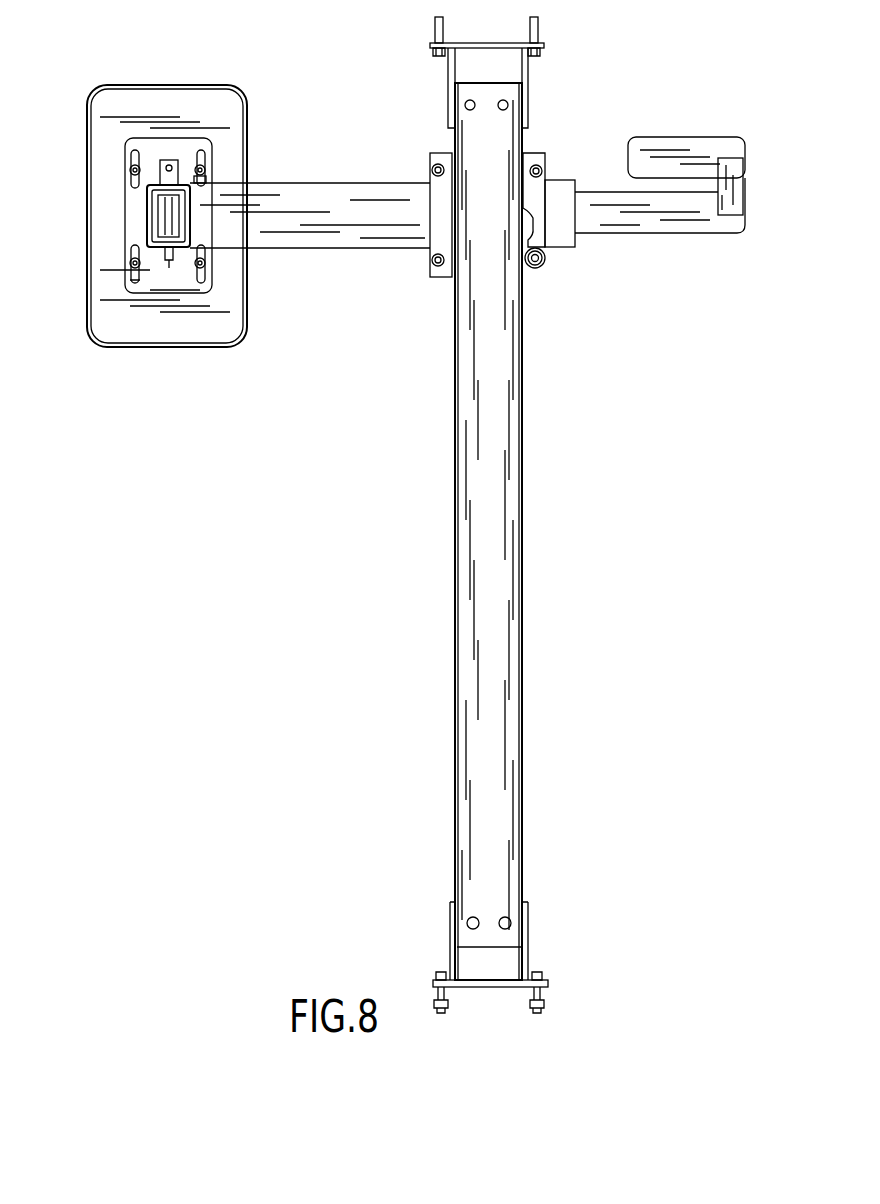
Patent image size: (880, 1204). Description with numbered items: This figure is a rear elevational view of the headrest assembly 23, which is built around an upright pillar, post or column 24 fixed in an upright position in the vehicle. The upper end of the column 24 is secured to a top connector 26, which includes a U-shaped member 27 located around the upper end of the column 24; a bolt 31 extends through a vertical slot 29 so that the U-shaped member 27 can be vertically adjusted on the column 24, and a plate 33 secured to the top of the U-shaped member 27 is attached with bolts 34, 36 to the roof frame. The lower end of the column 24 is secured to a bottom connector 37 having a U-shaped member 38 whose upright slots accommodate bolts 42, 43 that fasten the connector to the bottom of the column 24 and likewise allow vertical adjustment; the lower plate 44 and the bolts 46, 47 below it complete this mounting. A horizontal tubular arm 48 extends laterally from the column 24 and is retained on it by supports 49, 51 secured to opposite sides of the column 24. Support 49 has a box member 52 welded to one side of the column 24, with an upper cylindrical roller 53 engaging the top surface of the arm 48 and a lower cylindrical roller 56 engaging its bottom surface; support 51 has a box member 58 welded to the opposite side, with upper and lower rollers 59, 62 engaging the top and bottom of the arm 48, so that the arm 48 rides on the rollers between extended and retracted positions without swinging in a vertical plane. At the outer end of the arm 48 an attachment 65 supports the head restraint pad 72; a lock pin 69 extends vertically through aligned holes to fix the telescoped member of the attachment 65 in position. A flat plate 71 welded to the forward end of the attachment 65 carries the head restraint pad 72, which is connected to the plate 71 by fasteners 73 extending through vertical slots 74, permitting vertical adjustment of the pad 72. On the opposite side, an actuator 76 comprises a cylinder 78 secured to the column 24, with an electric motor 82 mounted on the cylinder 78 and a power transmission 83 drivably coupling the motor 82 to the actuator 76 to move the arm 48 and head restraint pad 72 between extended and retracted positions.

The headrest assembly 23 is at (368, 462).
The column 24 is at (508, 458).
The top connector 26 is at (495, 65).
The U-shaped member 27 is at (455, 80).
The vertical slot 29 is at (466, 107).
The bolt 31 is at (507, 107).
The plate 33 is at (489, 43).
The bolt 34 is at (538, 21).
The bolt 36 is at (435, 20).
The bottom connector 37 is at (520, 969).
The U-shaped member 38 is at (528, 918).
The bolt 42 is at (510, 926).
The bolt 43 is at (468, 928).
The bottom plate 44 is at (485, 987).
The mounting bolt 46 is at (537, 1014).
The mounting bolt 47 is at (440, 1014).
The horizontal arm 48 is at (330, 232).
The support 49 is at (432, 292).
The support 51 is at (591, 262).
The box member 52 is at (408, 209).
The upper cylindrical roller 53 is at (432, 170).
The lower cylindrical roller 56 is at (432, 262).
The box member 58 is at (569, 184).
The upper roller 59 is at (542, 170).
The lower roller 62 is at (542, 266).
The attachment 65 is at (137, 228).
The lock pin 69 is at (168, 165).
The flat plate 71 is at (103, 210).
The head restraint pad 72 is at (205, 102).
The fasteners 73 is at (130, 170).
The vertical slots 74 is at (205, 160).
The actuator 76 is at (679, 177).
The cylinder 78 is at (682, 222).
The electric motor 82 is at (688, 145).
The power transmission 83 is at (733, 186).